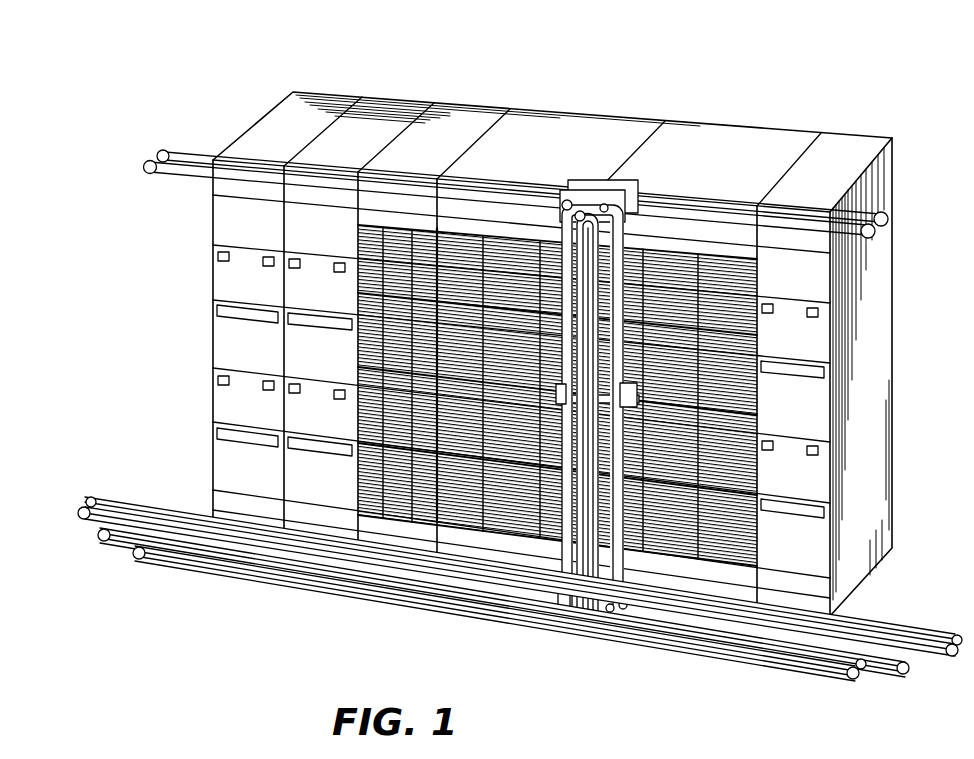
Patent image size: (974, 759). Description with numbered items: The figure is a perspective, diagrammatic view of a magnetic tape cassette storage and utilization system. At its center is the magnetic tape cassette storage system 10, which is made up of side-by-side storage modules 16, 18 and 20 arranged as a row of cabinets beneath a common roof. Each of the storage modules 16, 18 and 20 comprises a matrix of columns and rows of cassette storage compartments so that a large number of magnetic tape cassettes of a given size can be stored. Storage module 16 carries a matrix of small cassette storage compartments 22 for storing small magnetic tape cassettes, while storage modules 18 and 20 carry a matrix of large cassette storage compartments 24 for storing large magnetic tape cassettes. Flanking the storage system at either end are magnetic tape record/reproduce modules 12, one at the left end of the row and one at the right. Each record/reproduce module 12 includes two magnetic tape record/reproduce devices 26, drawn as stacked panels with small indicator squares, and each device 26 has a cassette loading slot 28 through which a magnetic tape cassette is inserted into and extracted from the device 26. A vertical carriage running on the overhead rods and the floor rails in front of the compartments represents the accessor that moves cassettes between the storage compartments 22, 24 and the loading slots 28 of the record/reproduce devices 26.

The magnetic tape cassette storage system 10 is at (595, 110).
The magnetic tape record/reproduce module 12 is at (402, 94).
The storage module 16 is at (448, 128).
The storage module 18 is at (640, 124).
The storage module 20 is at (735, 140).
The small cassette storage compartment 22 is at (395, 505).
The large cassette storage compartment 24 is at (507, 506).
The magnetic tape record/reproduce device 26 is at (233, 353).
The cassette loading slot 28 is at (218, 310).